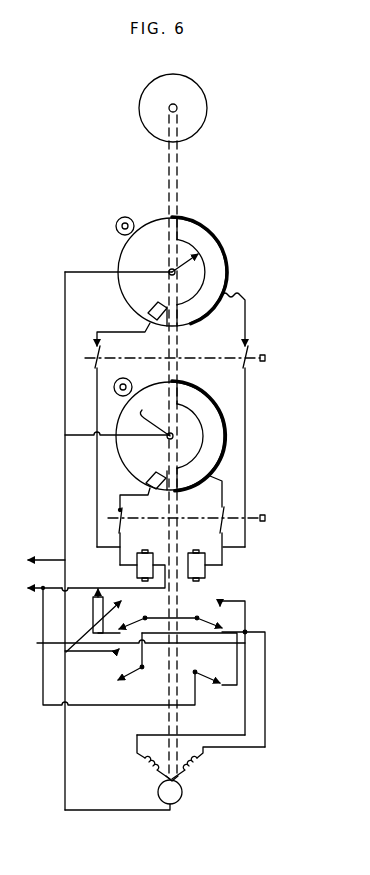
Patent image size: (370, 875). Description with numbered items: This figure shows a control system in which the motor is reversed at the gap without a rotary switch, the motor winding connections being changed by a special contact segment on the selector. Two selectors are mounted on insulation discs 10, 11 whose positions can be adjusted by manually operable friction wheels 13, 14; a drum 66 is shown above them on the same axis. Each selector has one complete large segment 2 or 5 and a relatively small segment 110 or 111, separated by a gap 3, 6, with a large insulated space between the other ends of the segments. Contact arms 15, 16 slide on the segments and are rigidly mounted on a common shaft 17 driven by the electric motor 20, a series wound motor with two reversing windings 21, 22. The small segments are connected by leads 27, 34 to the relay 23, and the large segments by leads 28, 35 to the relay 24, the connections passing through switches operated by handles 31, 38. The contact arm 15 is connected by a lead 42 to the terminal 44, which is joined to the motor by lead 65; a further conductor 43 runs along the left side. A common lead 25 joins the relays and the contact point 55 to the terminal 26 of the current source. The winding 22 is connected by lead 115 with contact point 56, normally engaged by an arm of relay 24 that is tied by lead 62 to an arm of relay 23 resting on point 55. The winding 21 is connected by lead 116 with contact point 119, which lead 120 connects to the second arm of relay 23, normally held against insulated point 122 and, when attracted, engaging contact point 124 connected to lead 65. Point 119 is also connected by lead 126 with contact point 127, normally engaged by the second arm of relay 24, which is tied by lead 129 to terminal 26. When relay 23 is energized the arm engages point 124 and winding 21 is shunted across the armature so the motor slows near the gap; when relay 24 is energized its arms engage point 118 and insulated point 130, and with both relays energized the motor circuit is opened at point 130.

The drum 66 is at (207, 109).
The friction wheel 14 is at (118, 220).
The friction wheel 13 is at (130, 382).
The insulation disc 11 is at (148, 222).
The conducting segment 5 is at (222, 265).
The contact arm 16 is at (186, 266).
The gap 6 is at (187, 318).
The small segment 111 is at (150, 306).
The handle 38 is at (266, 357).
The conducting segment 2 is at (213, 402).
The insulation disc 10 is at (223, 425).
The contact arm 15 is at (159, 421).
The common shaft 17 is at (183, 437).
The small segment 110 is at (149, 475).
The gap 3 is at (176, 486).
The lead 35 is at (246, 462).
The handle 31 is at (266, 517).
The lead 42 is at (117, 446).
The conductor 43 is at (65, 466).
The lead 34 is at (97, 480).
The terminal 44 is at (34, 558).
The terminal 26 is at (36, 590).
The common lead 25 is at (87, 592).
The lead 27 is at (122, 540).
The relay 23 is at (153, 555).
The relay 24 is at (220, 547).
The lead 28 is at (226, 560).
The contact point 119 is at (127, 644).
The contact point 55 is at (66, 650).
The contact point 124 is at (112, 662).
The insulated point 122 is at (114, 685).
The lead 62 is at (162, 618).
The lead 120 is at (203, 627).
The contact point 118 is at (226, 600).
The contact point 56 is at (225, 626).
The insulated point 130 is at (222, 655).
The lead 126 is at (189, 659).
The contact point 127 is at (210, 694).
The lead 129 is at (115, 706).
The lead 116 is at (244, 722).
The lead 115 is at (266, 718).
The motor winding 21 is at (146, 773).
The motor winding 22 is at (197, 773).
The electric motor 20 is at (183, 793).
The lead 65 is at (110, 811).